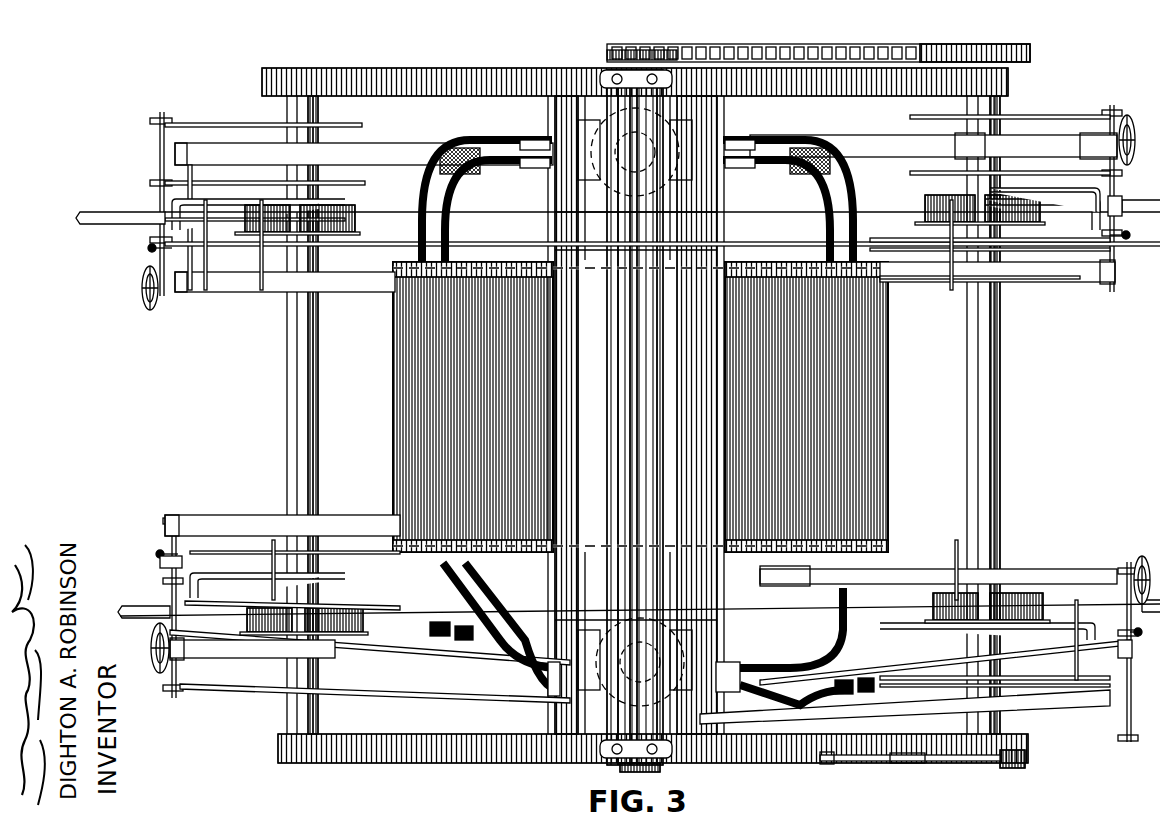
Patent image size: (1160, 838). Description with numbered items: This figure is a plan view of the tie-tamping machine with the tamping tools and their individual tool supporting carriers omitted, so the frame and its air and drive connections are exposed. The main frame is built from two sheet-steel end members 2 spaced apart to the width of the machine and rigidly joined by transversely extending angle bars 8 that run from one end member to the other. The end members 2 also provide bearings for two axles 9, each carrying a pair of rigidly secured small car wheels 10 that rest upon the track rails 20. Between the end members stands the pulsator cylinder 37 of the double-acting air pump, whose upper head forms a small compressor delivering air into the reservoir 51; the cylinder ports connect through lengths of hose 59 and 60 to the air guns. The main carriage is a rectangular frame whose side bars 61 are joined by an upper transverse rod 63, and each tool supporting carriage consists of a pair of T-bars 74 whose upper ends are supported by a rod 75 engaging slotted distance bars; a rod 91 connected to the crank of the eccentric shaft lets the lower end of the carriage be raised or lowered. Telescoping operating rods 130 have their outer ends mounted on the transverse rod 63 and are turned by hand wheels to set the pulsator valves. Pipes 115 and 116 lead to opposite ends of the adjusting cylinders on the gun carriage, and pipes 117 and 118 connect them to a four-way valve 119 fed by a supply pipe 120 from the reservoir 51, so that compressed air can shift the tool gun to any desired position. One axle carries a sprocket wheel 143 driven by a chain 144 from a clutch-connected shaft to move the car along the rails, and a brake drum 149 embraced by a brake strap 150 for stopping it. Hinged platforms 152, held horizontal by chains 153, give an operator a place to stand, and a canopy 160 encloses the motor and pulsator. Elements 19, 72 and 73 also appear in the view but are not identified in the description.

The end member 2 is at (348, 84).
The angle bar 8 is at (548, 105).
The axle 9 is at (320, 432).
The small car wheel 10 is at (262, 292).
The pipe 19 is at (168, 219).
The rail 20 is at (78, 221).
The cylinder 37 is at (603, 123).
The reservoir 51 is at (612, 95).
The hose 59 is at (472, 158).
The hose 60 is at (428, 165).
The side bar 61 is at (525, 666).
The upper transverse rod 63 is at (535, 191).
The rod 72 is at (238, 292).
The hand wheel 73 is at (140, 287).
The T-bar 74 is at (342, 143).
The rod 75 is at (161, 116).
The rod 91 is at (148, 248).
The pipe 115 is at (188, 183).
The pipe 116 is at (312, 256).
The pipe 117 is at (205, 292).
The pipe 118 is at (172, 207).
The four-way valve 119 is at (1118, 204).
The supply pipe 120 is at (365, 205).
The telescoping operating rod 130 is at (248, 181).
The sprocket wheel 143 is at (985, 45).
The chain 144 is at (782, 44).
The brake drum 149 is at (1000, 768).
The brake strap 150 is at (1026, 758).
The platform 152 is at (410, 397).
The chain 153 is at (393, 278).
The canopy 160 is at (590, 467).